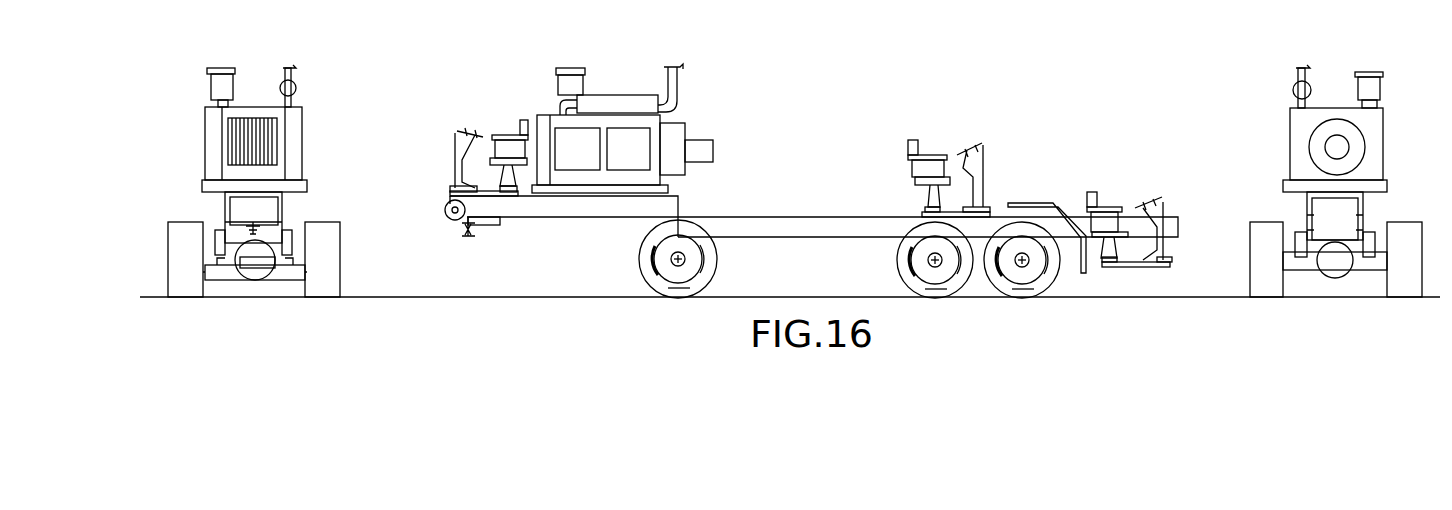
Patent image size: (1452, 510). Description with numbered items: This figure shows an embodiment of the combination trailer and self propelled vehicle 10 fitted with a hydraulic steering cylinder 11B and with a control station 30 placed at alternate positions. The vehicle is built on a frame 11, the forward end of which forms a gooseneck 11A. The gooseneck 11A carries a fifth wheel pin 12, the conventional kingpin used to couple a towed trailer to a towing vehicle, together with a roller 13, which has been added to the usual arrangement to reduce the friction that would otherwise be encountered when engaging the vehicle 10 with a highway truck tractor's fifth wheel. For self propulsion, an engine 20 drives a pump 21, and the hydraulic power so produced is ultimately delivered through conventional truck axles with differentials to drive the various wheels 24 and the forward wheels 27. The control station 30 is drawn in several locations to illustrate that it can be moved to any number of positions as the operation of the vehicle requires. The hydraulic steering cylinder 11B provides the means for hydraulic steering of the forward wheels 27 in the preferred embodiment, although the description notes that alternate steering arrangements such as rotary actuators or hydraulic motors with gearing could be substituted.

The combination trailer and self propelled vehicle 10 is at (837, 220).
The frame 11 is at (762, 218).
The gooseneck 11A is at (553, 207).
The hydraulic steering cylinder 11B is at (252, 263).
The fifth wheel pin 12 is at (263, 245).
The roller 13 is at (445, 215).
The engine 20 is at (257, 110).
The pump 21 is at (698, 147).
The wheels 24 is at (933, 293).
The forward wheels 27 is at (187, 288).
The control station 30 is at (457, 130).